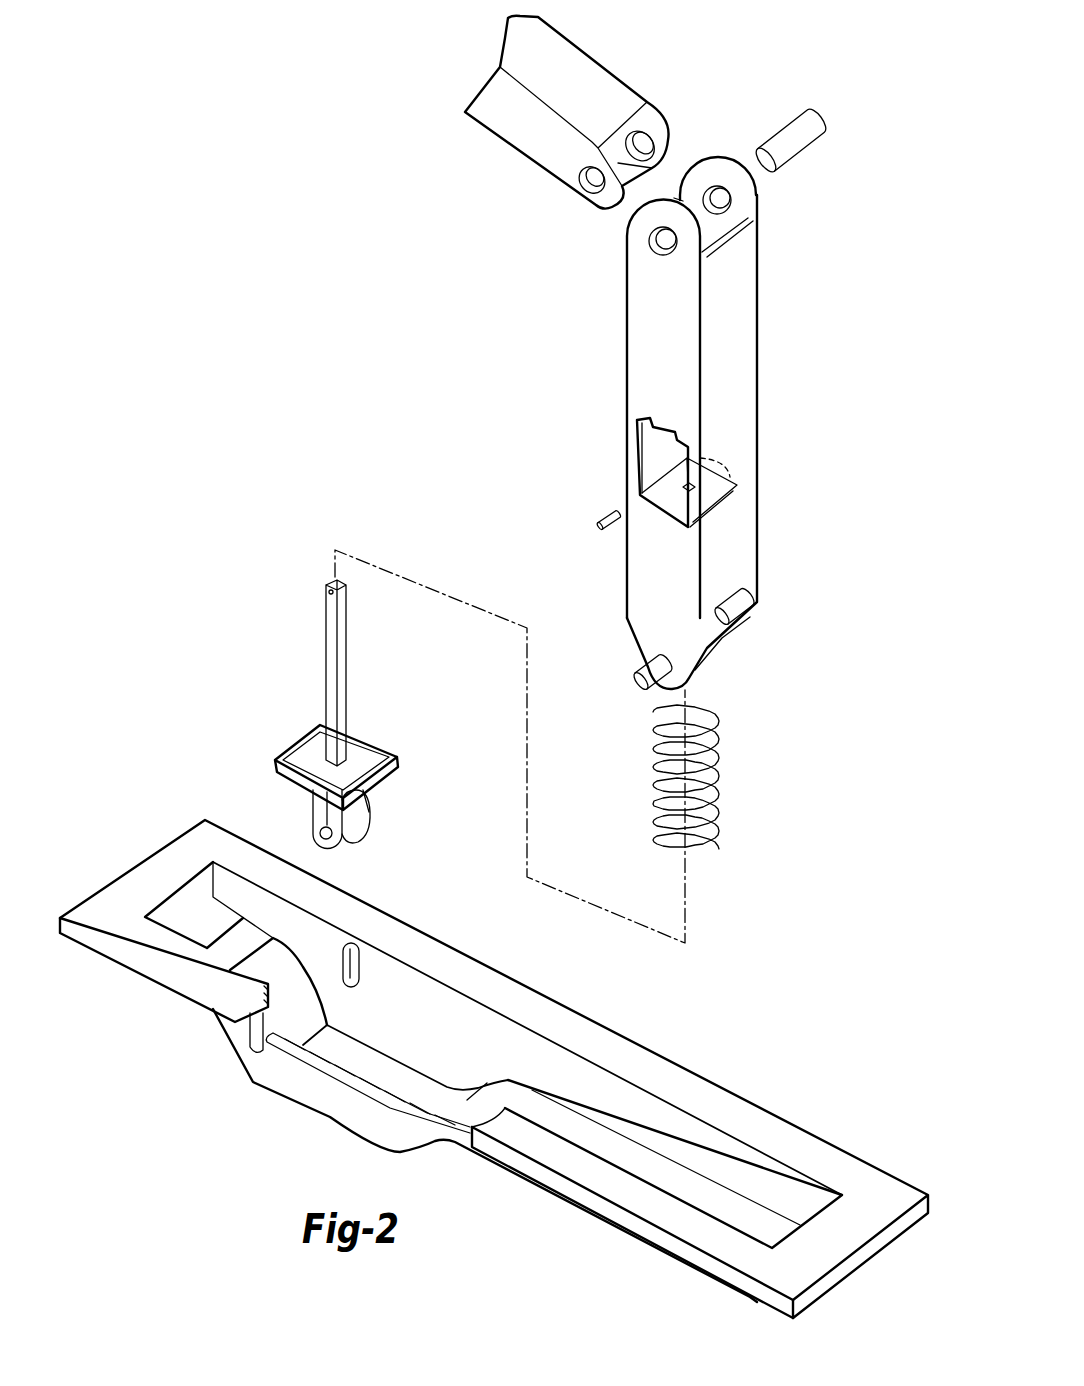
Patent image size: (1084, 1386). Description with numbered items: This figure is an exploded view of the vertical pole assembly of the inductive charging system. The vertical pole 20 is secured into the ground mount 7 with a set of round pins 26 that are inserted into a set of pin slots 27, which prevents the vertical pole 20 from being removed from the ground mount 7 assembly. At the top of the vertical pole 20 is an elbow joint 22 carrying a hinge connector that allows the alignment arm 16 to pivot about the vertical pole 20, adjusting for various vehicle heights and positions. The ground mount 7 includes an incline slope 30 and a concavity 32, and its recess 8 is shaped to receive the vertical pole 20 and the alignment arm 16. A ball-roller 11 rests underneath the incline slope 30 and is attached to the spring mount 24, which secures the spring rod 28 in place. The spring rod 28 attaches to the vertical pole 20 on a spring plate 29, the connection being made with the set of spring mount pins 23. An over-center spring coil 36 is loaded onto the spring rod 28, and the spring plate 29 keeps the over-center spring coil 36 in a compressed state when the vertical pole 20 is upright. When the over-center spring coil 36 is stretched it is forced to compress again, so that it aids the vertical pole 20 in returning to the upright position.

The ground mount 7 is at (494, 1045).
The recess 8 is at (727, 1205).
The ball-roller 11 is at (363, 826).
The alignment arm 16 is at (588, 68).
The vertical pole 20 is at (737, 305).
The elbow joint 22 is at (781, 137).
The spring mount pins 23 is at (612, 516).
The spring mount 24 is at (314, 657).
The round pins 26 is at (637, 678).
The pin slots 27 is at (358, 963).
The spring rod 28 is at (343, 605).
The spring plate 29 is at (728, 463).
The incline slope 30 is at (290, 1002).
The concavity 32 is at (250, 932).
The over-center spring coil 36 is at (720, 773).